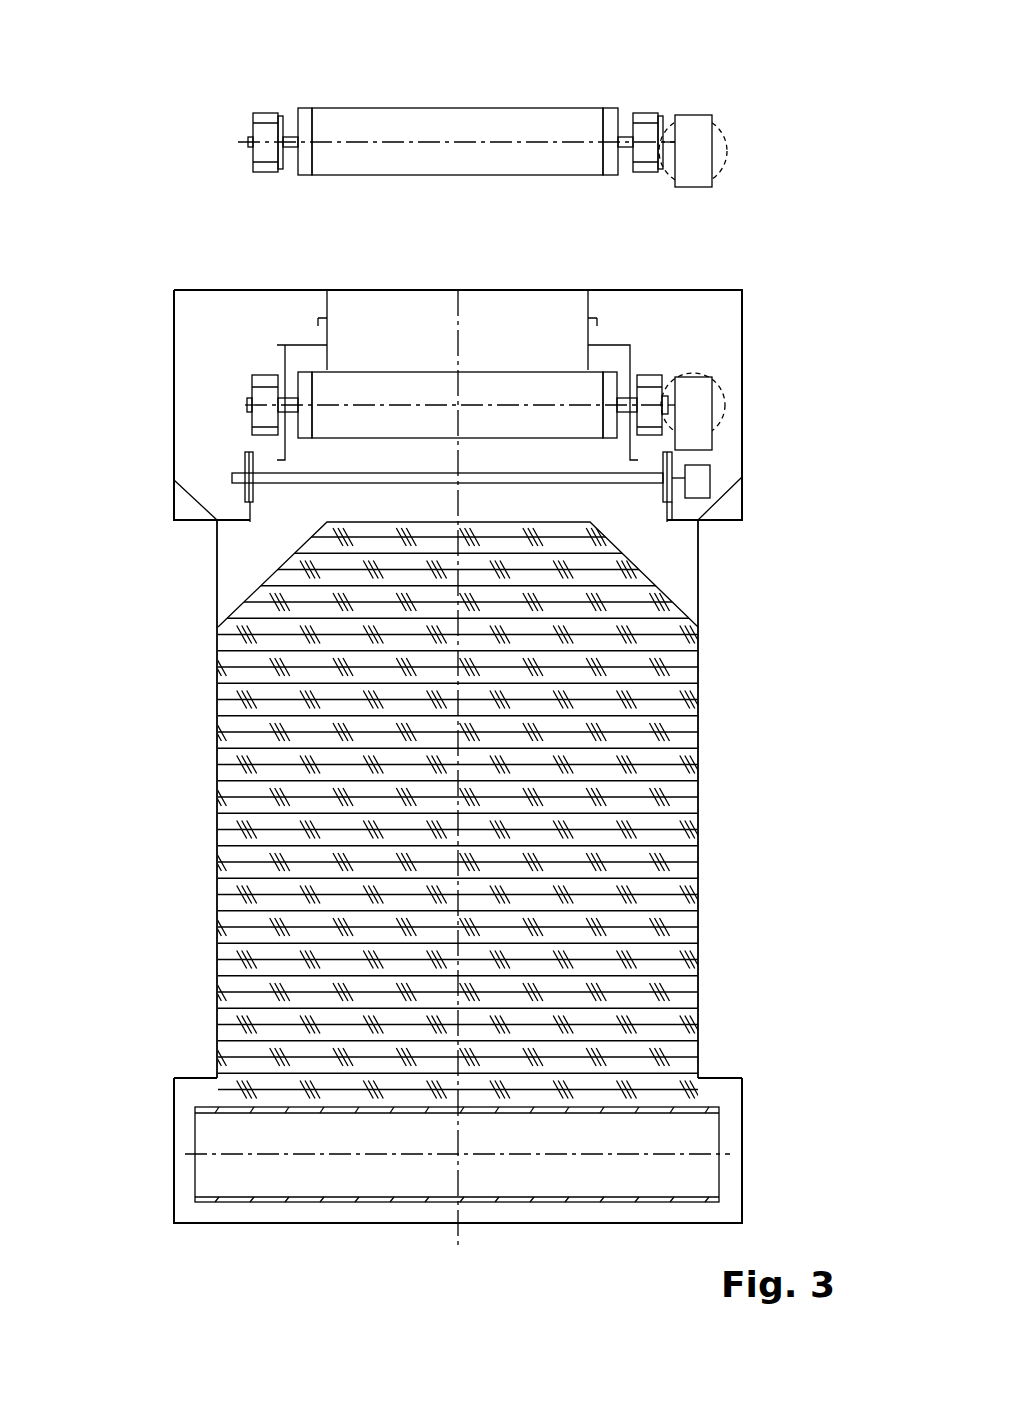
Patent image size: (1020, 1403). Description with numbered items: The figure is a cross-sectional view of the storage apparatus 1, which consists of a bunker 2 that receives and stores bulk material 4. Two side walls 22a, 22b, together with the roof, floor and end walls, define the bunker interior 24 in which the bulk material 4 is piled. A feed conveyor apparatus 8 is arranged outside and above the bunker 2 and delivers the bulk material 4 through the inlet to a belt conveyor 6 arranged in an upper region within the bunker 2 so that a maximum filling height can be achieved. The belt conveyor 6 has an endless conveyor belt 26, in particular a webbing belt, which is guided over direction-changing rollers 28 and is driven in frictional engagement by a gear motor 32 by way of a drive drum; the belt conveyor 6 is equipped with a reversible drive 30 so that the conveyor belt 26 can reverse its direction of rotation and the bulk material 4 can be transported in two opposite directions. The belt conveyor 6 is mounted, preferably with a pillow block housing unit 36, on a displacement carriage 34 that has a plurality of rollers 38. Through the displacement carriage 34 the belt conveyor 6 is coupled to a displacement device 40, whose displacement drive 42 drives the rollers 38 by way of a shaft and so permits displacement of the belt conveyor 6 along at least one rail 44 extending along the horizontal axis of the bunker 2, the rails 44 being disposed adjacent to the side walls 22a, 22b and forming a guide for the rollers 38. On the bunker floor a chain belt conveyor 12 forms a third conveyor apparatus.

The storage apparatus 1 is at (150, 176).
The bunker 2 is at (203, 386).
The bulk material 4 is at (680, 930).
The belt conveyor 6 is at (548, 332).
The feed conveyor apparatus 8 is at (494, 126).
The chain belt conveyor 12 is at (220, 1137).
The first side wall 22a is at (215, 607).
The second side wall 22b is at (700, 607).
The bunker interior 24 is at (627, 727).
The conveyor belt 26 is at (488, 310).
The direction-changing rollers 28 is at (650, 386).
The reversible drive 30 is at (694, 366).
The gear motor 32 is at (702, 410).
The displacement carriage 34 is at (293, 343).
The pillow block housing unit 36 is at (256, 420).
The rollers 38 is at (243, 494).
The displacement device 40 is at (729, 472).
The displacement drive 42 is at (700, 492).
The rail 44 is at (232, 524).